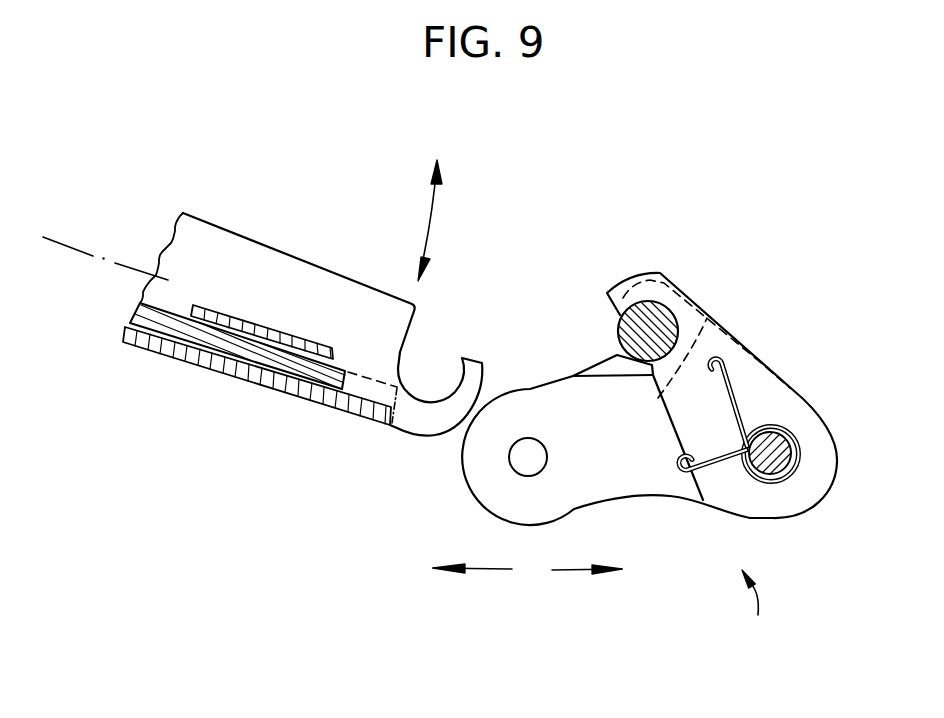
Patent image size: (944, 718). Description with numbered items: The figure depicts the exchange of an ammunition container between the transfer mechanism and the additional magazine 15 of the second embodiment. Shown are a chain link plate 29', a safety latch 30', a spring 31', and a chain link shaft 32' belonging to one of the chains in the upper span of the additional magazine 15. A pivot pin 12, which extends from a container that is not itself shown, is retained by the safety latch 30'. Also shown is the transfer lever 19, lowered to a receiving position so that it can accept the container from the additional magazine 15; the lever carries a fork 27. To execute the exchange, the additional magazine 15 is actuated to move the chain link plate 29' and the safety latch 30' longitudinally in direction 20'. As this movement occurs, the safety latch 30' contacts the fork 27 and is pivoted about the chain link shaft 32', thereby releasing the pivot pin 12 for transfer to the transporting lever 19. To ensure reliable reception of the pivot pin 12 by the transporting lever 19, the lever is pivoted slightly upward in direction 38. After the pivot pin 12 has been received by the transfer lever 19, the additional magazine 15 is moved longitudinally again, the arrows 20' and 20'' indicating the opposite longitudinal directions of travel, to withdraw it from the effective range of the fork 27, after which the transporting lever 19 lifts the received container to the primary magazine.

The transfer lever 19 is at (302, 313).
The fork 27 is at (473, 358).
The direction of upward pivoting 38 is at (429, 220).
The pivot pin 12 is at (650, 332).
The chain link plate 29' is at (617, 452).
The safety latch 30' is at (718, 395).
The spring 31' is at (739, 458).
The chain link shaft 32' is at (821, 437).
The longitudinal direction of movement 20' is at (472, 594).
The longitudinal direction of movement 20'' is at (587, 595).
The additional magazine 15 is at (757, 611).